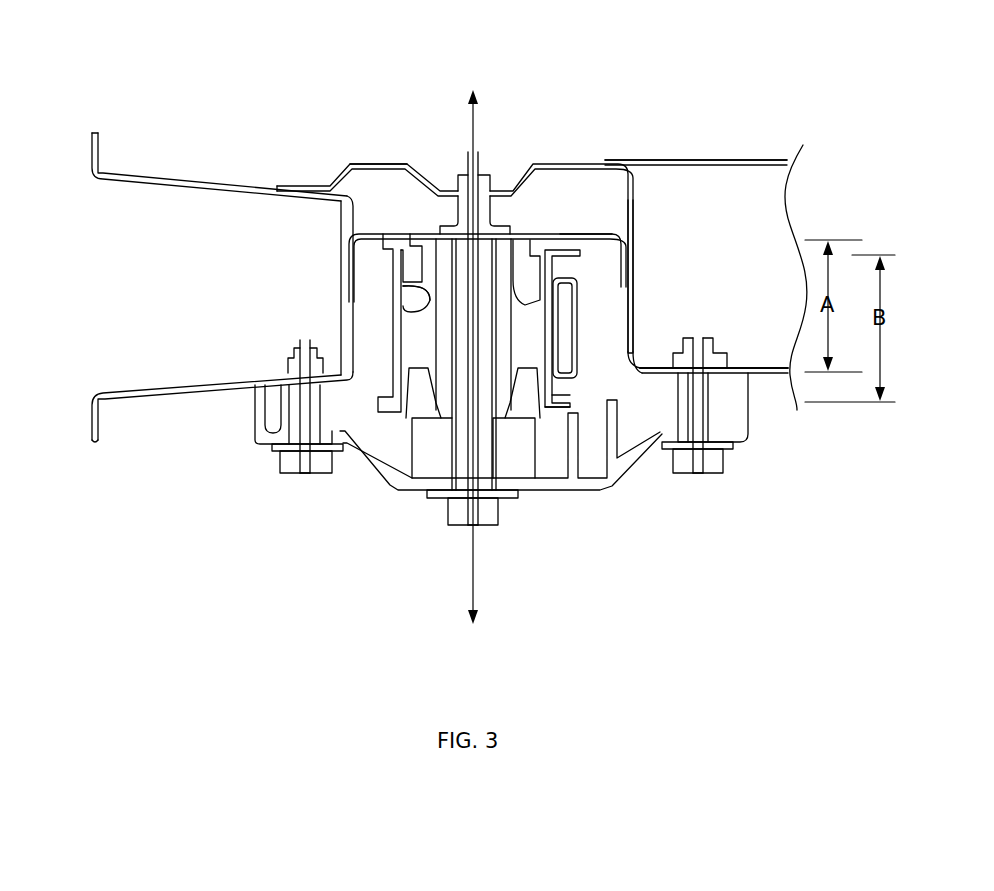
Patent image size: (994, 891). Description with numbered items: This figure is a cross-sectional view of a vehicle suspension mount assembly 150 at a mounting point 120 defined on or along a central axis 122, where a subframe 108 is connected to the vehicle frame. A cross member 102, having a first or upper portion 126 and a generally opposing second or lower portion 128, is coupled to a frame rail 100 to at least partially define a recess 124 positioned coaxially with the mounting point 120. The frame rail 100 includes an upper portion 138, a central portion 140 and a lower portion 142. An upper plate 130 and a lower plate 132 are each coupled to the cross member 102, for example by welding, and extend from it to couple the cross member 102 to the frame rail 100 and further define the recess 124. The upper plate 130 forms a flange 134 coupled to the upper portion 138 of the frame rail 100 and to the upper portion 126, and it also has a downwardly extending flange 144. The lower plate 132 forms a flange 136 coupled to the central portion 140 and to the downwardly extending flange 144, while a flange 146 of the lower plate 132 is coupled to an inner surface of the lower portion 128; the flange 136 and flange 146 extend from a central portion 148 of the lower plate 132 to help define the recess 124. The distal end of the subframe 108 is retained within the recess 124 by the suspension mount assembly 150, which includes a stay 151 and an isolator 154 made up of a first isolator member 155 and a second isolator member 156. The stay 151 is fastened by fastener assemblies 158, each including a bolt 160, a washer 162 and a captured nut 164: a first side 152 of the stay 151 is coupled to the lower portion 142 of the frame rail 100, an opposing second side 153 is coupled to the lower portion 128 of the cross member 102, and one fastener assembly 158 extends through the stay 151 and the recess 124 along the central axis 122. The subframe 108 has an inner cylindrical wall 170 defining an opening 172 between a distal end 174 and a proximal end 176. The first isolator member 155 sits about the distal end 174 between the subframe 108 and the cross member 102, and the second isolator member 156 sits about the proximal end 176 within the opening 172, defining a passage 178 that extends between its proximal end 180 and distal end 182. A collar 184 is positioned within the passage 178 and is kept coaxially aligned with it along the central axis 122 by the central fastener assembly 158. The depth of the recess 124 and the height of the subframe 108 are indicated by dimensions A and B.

The frame rail 100 is at (95, 400).
The cross member 102 is at (768, 160).
The subframe 108 is at (380, 308).
The mounting point 120 is at (522, 94).
The central axis 122 is at (470, 130).
The recess 124 is at (614, 336).
The upper portion of cross member 126 is at (652, 160).
The lower portion of cross member 128 is at (760, 376).
The upper plate 130 is at (380, 160).
The lower plate 132 is at (635, 322).
The flange of upper plate 134 is at (318, 191).
The flange of lower plate 136 is at (350, 262).
The upper portion of frame rail 138 is at (150, 178).
The central portion of frame rail 140 is at (343, 232).
The lower portion of frame rail 142 is at (178, 382).
The downwardly extending flange 144 is at (634, 212).
The flange of lower plate 146 is at (667, 338).
The central portion of lower plate 148 is at (577, 236).
The suspension mount assembly 150 is at (222, 247).
The stay 151 is at (590, 492).
The first side of stay 152 is at (258, 405).
The second side of stay 153 is at (750, 420).
The isolator 154 is at (418, 334).
The first isolator member 155 is at (392, 242).
The second isolator member 156 is at (510, 410).
The fastener assembly 158 is at (283, 474).
The bolt 160 is at (312, 476).
The washer 162 is at (335, 452).
The captured nut 164 is at (505, 162).
The inner cylindrical wall 170 is at (402, 338).
The opening 172 is at (418, 400).
The distal end of inner cylindrical wall 174 is at (553, 273).
The proximal end of inner cylindrical wall 176 is at (558, 405).
The passage 178 is at (460, 258).
The proximal end of second isolator member 180 is at (515, 250).
The distal end of second isolator member 182 is at (440, 405).
The collar 184 is at (496, 347).